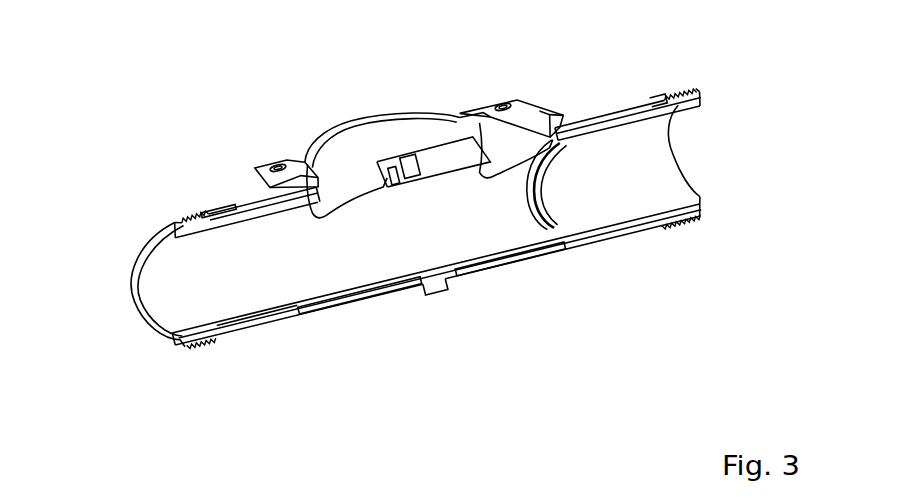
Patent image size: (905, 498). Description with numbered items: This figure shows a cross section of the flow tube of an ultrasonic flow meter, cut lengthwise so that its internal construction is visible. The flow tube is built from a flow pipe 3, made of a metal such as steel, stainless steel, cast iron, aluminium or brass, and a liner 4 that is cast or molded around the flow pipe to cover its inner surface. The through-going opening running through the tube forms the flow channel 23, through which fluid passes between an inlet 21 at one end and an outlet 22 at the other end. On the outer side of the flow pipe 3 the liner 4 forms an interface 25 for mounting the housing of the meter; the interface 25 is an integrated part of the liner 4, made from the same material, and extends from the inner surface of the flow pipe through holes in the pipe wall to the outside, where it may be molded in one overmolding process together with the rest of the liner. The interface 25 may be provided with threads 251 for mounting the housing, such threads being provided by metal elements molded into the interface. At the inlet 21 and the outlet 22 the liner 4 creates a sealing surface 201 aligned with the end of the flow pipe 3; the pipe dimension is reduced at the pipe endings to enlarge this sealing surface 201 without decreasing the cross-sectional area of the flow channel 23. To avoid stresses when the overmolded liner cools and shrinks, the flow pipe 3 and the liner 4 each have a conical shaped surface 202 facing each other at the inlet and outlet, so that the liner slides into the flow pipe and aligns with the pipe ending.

The flow pipe 3 is at (257, 198).
The liner 4 is at (227, 322).
The inlet 21 is at (127, 307).
The outlet 22 is at (683, 153).
The flow channel 23 is at (330, 262).
The interface 25 is at (305, 162).
The sealing surface 201 is at (703, 202).
The conical shaped surface 202 is at (700, 208).
The threads 251 is at (277, 167).